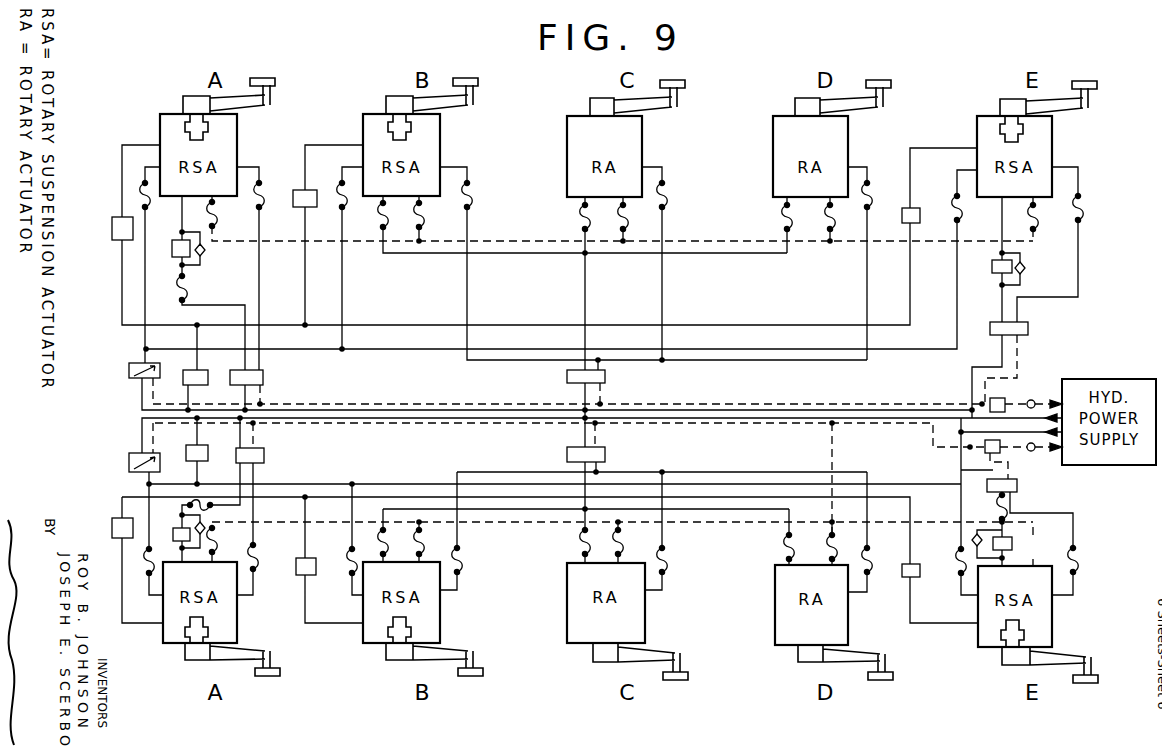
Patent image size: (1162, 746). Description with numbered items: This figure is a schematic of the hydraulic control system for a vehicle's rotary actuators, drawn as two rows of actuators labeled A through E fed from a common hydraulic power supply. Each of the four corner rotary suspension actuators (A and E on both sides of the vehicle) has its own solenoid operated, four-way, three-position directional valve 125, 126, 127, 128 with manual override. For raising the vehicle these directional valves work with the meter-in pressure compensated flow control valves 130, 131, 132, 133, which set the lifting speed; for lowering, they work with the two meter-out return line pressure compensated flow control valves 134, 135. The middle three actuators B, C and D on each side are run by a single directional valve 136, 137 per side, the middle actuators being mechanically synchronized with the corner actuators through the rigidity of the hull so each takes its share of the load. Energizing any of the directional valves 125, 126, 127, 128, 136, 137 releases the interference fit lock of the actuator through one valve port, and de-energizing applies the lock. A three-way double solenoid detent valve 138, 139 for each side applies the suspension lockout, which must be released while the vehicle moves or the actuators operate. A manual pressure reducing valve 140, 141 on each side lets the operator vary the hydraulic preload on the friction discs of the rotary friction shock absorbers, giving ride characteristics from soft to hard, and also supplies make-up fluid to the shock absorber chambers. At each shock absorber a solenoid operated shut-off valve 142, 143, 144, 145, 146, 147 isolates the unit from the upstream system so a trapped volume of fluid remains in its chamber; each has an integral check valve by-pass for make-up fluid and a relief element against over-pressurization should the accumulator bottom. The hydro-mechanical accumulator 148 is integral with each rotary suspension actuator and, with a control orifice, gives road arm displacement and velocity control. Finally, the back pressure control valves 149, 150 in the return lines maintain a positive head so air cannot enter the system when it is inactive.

The directional valve 125 is at (264, 456).
The directional valve 126 is at (263, 378).
The directional valve 127 is at (1028, 329).
The directional valve 128 is at (1017, 486).
The pressure compensated flow control valve 130 is at (176, 530).
The pressure compensated flow control valve 131 is at (1012, 543).
The pressure compensated flow control valve 132 is at (175, 244).
The pressure compensated flow control valve 133 is at (992, 268).
The return line pressure compensated flow control valve 134 is at (1005, 400).
The return line pressure compensated flow control valve 135 is at (985, 448).
The directional valve 136 is at (605, 455).
The directional valve 137 is at (605, 376).
The three-way double solenoid detent valve 138 is at (130, 461).
The three-way double solenoid detent valve 139 is at (130, 370).
The manual pressure reducing valve 140 is at (205, 455).
The manual pressure reducing valve 141 is at (218, 364).
The solenoid operated shut-off valve 142 is at (112, 524).
The solenoid operated shut-off valve 143 is at (298, 574).
The solenoid operated shut-off valve 144 is at (905, 576).
The solenoid operated shut-off valve 145 is at (112, 224).
The solenoid operated shut-off valve 146 is at (300, 196).
The solenoid operated shut-off valve 147 is at (905, 210).
The hydro-mechanical accumulator 148 is at (183, 118).
The back pressure control valve 149 is at (1034, 400).
The back pressure control valve 150 is at (1033, 451).